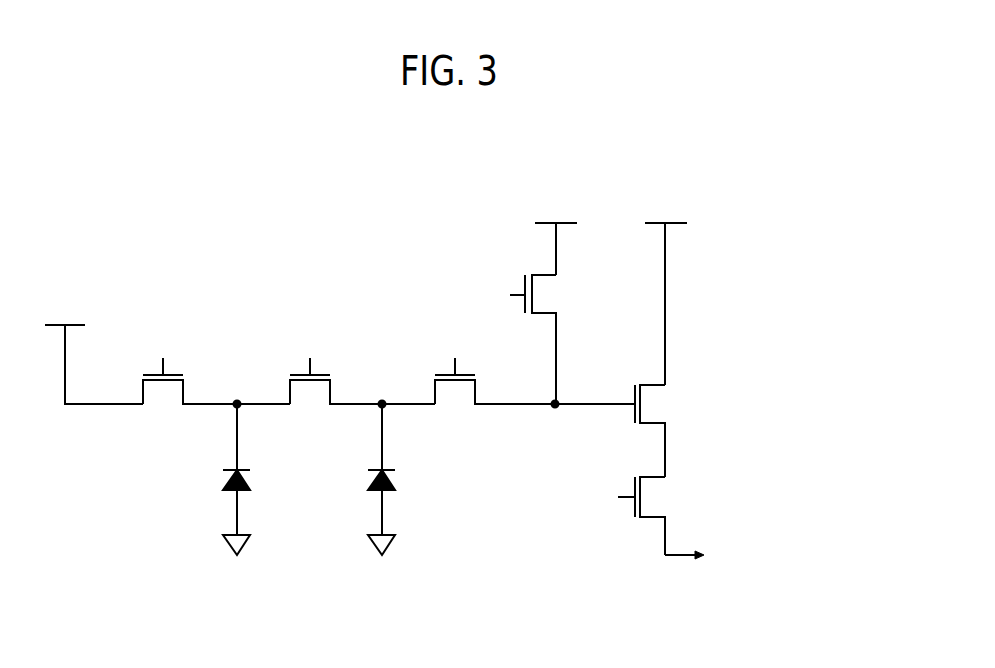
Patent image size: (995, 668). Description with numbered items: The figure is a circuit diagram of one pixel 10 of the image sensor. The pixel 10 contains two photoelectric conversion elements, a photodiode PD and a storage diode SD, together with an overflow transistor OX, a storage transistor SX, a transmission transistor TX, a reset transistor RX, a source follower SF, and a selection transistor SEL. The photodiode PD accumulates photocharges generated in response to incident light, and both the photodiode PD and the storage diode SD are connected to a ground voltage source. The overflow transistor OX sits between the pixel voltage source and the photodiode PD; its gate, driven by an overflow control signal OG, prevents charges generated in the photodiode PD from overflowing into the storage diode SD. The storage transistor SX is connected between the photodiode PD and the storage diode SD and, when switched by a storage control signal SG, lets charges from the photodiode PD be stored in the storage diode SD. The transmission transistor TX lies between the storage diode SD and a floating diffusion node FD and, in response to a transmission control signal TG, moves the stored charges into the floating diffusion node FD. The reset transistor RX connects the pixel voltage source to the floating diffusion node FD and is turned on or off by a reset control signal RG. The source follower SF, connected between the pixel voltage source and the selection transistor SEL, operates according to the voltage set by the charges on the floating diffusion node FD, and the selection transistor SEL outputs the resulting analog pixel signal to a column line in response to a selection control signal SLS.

The pixel 10 is at (783, 168).
The overflow transistor OX is at (190, 397).
The overflow control signal OG is at (162, 354).
The storage transistor SX is at (336, 397).
The storage control signal SG is at (310, 354).
The transmission transistor TX is at (495, 397).
The transmission control signal TG is at (454, 354).
The floating diffusion node FD is at (594, 393).
The reset transistor RX is at (547, 339).
The reset control signal RG is at (501, 295).
The source follower SF is at (655, 431).
The selection transistor SEL is at (660, 516).
The selection control signal SLS is at (605, 497).
The photodiode PD is at (220, 479).
The storage diode SD is at (365, 479).